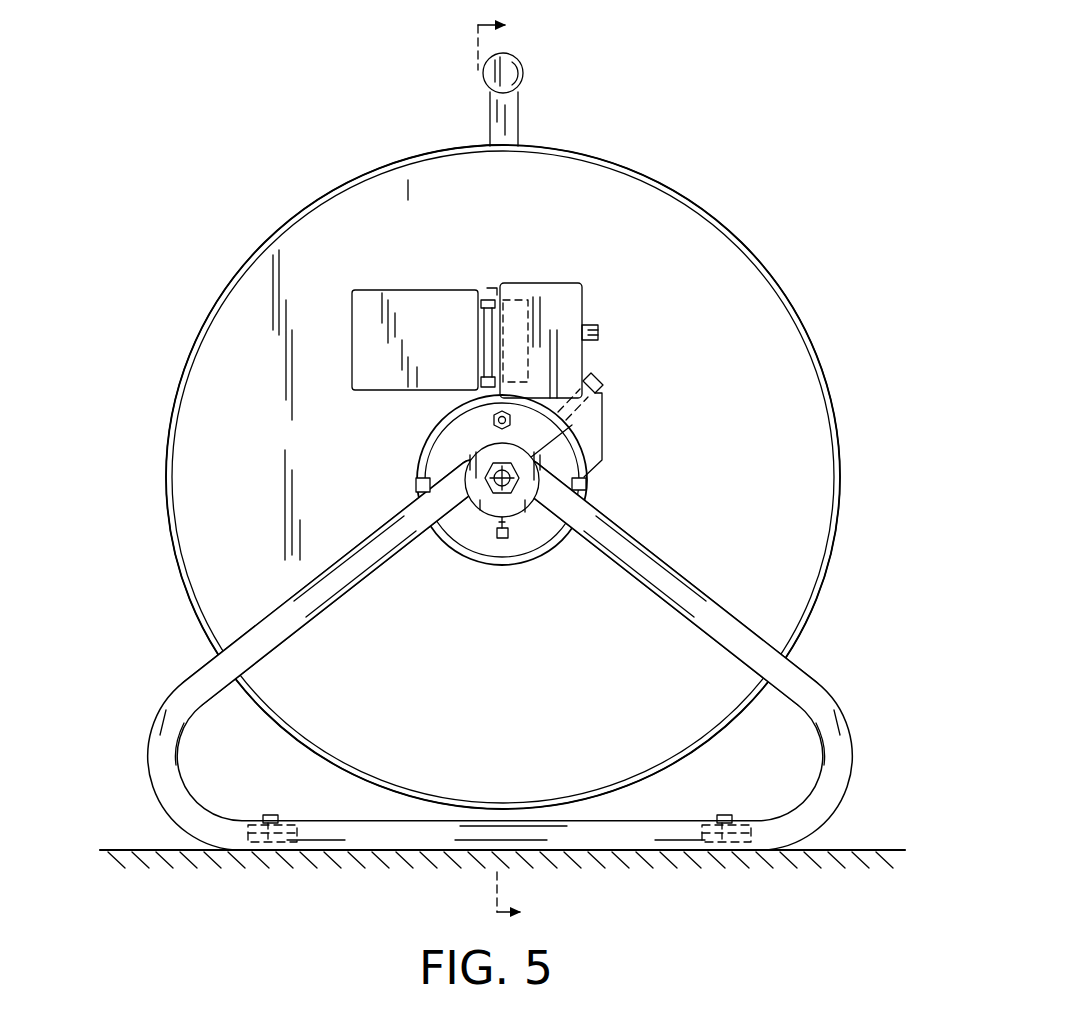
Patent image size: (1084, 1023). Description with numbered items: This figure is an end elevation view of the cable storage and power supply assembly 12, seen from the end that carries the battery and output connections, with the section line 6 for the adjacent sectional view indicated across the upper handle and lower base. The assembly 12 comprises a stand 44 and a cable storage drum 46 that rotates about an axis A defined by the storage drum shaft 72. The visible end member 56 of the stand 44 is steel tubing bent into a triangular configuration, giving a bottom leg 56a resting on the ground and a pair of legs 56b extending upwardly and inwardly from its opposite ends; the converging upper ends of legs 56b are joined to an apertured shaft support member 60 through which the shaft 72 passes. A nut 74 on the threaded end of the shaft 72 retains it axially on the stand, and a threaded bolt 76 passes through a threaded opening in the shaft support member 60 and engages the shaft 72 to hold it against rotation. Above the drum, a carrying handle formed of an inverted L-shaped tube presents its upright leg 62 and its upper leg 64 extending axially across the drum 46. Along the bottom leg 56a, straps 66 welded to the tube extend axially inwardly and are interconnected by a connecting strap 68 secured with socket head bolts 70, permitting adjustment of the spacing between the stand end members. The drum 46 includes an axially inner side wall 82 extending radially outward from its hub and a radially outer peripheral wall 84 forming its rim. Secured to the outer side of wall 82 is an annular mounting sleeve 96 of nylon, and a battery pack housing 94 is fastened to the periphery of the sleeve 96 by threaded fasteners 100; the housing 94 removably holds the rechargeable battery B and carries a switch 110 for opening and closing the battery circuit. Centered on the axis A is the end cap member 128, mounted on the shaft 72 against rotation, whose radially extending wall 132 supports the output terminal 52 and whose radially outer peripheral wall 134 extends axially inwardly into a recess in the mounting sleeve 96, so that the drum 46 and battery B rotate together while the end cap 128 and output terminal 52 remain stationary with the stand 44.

The cable storage and power supply assembly 12 is at (620, 130).
The stand 44 is at (822, 678).
The cable storage drum 46 is at (645, 174).
The output terminal 52 is at (493, 421).
The end member 56 is at (470, 698).
The bottom leg 56a is at (418, 838).
The legs 56b is at (288, 604).
The shaft support member 60 is at (478, 498).
The leg 62 is at (515, 128).
The leg 64 is at (525, 68).
The straps 66 is at (258, 850).
The connecting strap 68 is at (284, 822).
The socket head bolts 70 is at (271, 813).
The storage drum shaft 72 is at (513, 493).
The nuts 74 is at (486, 468).
The threaded bolt 76 is at (503, 540).
The axially inner side wall 82 is at (750, 302).
The radially outer peripheral wall 84 is at (730, 232).
The battery pack housing 94 is at (578, 298).
The annular mounting sleeve 96 is at (590, 450).
The threaded fasteners 100 is at (600, 388).
The switch 110 is at (600, 332).
The end cap member 128 is at (588, 484).
The wall 132 is at (425, 486).
The radially outer peripheral wall 134 is at (528, 548).
The axis A is at (549, 440).
The battery B is at (420, 305).
The section line 6- 6 is at (480, 471).